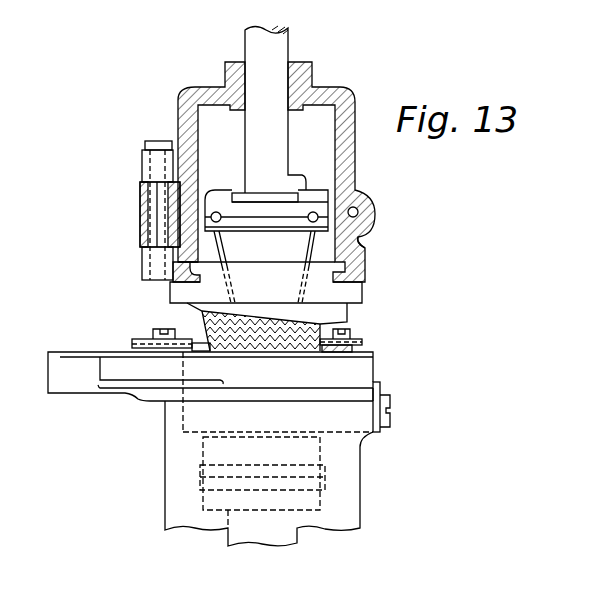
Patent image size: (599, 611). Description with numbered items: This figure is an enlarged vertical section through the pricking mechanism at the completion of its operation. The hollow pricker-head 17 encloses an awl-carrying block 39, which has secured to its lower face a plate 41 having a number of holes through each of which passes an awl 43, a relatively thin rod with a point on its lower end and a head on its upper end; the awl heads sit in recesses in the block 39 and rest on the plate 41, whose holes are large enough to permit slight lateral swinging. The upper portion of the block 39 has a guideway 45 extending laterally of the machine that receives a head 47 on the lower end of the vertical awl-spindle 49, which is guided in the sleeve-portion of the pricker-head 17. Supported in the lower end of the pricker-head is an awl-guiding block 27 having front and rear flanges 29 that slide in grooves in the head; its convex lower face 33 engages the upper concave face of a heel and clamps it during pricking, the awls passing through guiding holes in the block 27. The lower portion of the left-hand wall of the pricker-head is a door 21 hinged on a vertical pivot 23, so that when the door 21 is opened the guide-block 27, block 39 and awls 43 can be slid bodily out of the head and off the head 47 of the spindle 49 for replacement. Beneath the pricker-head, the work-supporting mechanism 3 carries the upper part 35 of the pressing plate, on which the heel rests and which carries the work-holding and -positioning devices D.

The left-hand work-supporting mechanism 3 is at (361, 490).
The pricker-head 17 is at (357, 160).
The door 21 is at (140, 207).
The vertical pivot 23 is at (165, 140).
The awl-guiding block 27 is at (362, 291).
The flanges 29 is at (192, 281).
The lower face 33 is at (348, 312).
The upper part 35 is at (374, 352).
The awl-carrying block 39 is at (361, 233).
The plate 41 is at (319, 210).
The awl 43 is at (226, 250).
The guideway 45 is at (238, 193).
The head 47 is at (366, 201).
The awl-spindle 49 is at (289, 50).
The work-holding and -positioning devices D is at (363, 342).